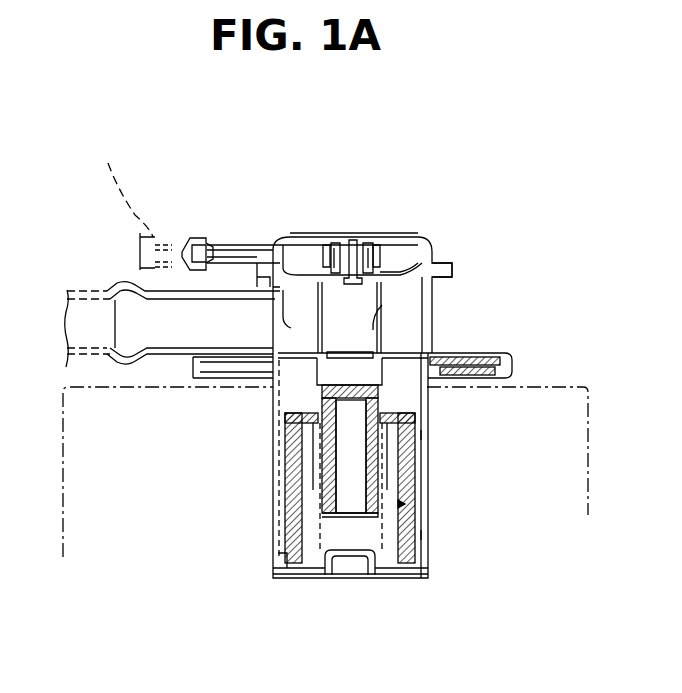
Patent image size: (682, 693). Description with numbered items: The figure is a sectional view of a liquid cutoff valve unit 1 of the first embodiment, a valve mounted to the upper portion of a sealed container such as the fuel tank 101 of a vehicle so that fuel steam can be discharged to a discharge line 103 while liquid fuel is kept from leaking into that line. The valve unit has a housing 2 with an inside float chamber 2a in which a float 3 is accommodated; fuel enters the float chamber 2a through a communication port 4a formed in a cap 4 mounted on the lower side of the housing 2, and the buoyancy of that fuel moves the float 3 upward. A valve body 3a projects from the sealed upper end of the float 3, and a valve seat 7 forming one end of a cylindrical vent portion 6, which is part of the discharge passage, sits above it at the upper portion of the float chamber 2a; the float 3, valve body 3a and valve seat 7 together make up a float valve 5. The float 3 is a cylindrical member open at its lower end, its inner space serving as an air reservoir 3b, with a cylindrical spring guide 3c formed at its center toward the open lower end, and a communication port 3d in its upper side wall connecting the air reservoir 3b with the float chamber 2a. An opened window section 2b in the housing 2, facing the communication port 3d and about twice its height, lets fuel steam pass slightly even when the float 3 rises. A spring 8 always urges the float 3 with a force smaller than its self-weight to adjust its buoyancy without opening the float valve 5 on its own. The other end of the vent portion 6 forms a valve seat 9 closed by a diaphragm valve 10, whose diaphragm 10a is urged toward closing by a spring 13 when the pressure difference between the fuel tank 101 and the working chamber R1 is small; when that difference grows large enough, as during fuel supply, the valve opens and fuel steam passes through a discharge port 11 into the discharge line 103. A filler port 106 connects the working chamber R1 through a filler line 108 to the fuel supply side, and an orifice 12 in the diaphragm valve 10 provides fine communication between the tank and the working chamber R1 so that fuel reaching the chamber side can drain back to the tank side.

The liquid cutoff valve unit 1 is at (355, 160).
The housing 2 is at (426, 473).
The float chamber 2a is at (422, 533).
The opened window section 2b is at (415, 435).
The float 3 is at (412, 445).
The valve body 3a is at (383, 385).
The air reservoir 3b is at (405, 504).
The spring guide 3c is at (320, 471).
The communication port 3d is at (405, 422).
The cap 4 is at (405, 578).
The communication port 4a is at (298, 575).
The float valve 5 is at (318, 380).
The vent portion 6 is at (370, 328).
The valve seat 7 is at (378, 353).
The spring 8 is at (320, 526).
The valve seat 9 is at (428, 268).
The diaphragm valve 10 is at (418, 242).
The diaphragm 10a is at (400, 258).
The discharge port 11 is at (190, 337).
The orifice 12 is at (355, 250).
The spring 13 is at (348, 252).
The fuel tank 101 is at (590, 455).
The discharge line 103 is at (80, 288).
The filler port 106 is at (227, 240).
The filler line 108 is at (117, 188).
The working chamber R1 is at (300, 260).